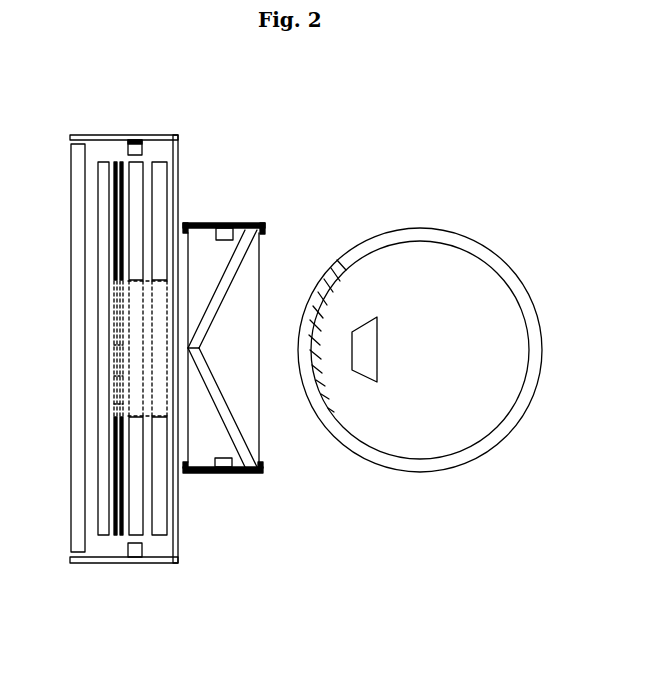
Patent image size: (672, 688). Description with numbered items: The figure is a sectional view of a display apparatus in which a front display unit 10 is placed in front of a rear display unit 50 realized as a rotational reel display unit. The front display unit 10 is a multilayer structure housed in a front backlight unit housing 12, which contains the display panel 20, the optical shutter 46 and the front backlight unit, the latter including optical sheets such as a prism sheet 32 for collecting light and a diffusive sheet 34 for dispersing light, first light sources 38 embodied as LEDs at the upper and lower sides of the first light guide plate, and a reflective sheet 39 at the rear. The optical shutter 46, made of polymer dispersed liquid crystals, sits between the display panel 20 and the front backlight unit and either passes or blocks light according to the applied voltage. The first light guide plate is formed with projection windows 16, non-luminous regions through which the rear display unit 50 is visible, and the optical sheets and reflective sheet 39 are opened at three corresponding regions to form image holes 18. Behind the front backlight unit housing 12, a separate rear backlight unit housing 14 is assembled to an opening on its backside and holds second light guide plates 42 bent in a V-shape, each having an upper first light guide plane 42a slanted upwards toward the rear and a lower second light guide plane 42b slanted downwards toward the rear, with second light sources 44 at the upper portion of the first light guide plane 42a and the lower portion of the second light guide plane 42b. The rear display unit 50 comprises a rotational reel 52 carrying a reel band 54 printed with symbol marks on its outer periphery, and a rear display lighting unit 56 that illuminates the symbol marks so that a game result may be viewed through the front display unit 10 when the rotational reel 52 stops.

The front display unit 10 is at (201, 577).
The front backlight unit housing 12 is at (104, 136).
The rear backlight unit housing 14 is at (218, 222).
The projection windows 16 is at (133, 299).
The image holes 18 is at (114, 345).
The display panel 20 is at (74, 153).
The prism sheet 32 is at (114, 213).
The diffusive sheet 34 is at (119, 240).
The first light sources 38 is at (137, 137).
The reflective sheet 39 is at (162, 180).
The second light guide plates 42 is at (345, 474).
The first light guide plane 42a is at (218, 303).
The second light guide plane 42b is at (228, 410).
The second light sources 44 is at (231, 227).
The optical shutter 46 is at (104, 187).
The rear display unit 50 is at (466, 498).
The rotational reel 52 is at (468, 230).
The reel band 54 is at (323, 296).
The rear display lighting unit 56 is at (371, 336).